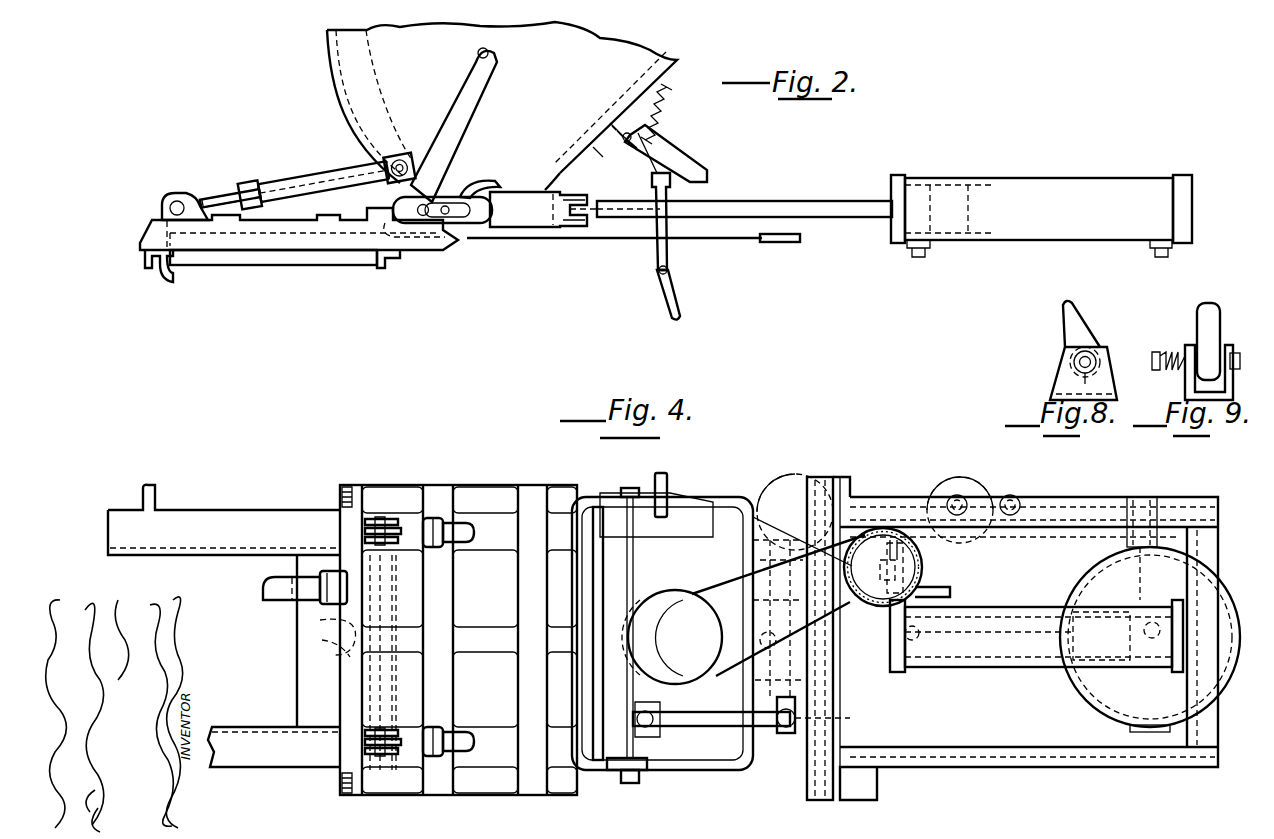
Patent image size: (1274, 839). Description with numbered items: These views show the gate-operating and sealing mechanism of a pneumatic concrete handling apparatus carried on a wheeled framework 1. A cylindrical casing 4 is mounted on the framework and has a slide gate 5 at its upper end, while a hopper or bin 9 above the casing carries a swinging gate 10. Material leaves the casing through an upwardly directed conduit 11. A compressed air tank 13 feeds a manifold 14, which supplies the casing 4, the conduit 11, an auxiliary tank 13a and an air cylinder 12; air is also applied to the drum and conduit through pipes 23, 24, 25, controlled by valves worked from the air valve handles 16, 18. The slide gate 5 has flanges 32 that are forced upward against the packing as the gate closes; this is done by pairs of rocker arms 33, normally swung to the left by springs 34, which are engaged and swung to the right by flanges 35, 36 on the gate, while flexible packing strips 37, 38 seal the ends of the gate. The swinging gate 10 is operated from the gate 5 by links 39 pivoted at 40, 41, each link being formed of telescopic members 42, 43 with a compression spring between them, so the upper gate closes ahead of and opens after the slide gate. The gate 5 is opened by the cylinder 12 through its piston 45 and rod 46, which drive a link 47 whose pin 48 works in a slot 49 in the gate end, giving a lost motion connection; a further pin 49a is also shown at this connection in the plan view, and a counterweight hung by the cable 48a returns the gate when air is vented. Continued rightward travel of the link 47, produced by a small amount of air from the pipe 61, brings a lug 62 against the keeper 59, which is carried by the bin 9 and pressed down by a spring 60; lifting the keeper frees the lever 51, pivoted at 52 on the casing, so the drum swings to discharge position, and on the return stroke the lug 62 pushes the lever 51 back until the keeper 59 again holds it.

In FIG. 4, the framework 1 is at (204, 520).
In FIG. 4, the cylindrical casing 4 is at (296, 657).
In FIG. 2, the slide gate 5 is at (150, 226).
In FIG. 4, the slide gate 5 is at (552, 492).
In FIG. 2, the hopper or bin 9 is at (655, 62).
In FIG. 2, the swinging gate 10 is at (473, 70).
In FIG. 4, the conduit 11 is at (918, 562).
In FIG. 4, the air cylinder 12 is at (990, 668).
In FIG. 4, the compressed air tank 13 is at (1087, 578).
In FIG. 4, the auxiliary tank 13a is at (962, 480).
In FIG. 4, the manifold 14 is at (1078, 538).
In FIG. 4, the air valve handle 16 is at (945, 590).
In FIG. 4, the air valve handle 18 is at (840, 730).
In FIG. 4, the pipe 23 is at (264, 594).
In FIG. 4, the pipe 24 is at (707, 722).
In FIG. 4, the pipe 25 is at (320, 640).
In FIG. 2, the gate flanges 32 is at (310, 258).
In FIG. 8, the rocker arms 33 is at (1062, 315).
In FIG. 9, the rocker arms 33 is at (1210, 322).
In FIG. 8, the springs 34 is at (1095, 352).
In FIG. 9, the springs 34 is at (1168, 352).
In FIG. 2, the gate flange 35 is at (146, 262).
In FIG. 2, the gate flange 36 is at (386, 264).
In FIG. 4, the flexible packing strip 37 is at (380, 675).
In FIG. 4, the flexible packing strip 38 is at (596, 510).
In FIG. 2, the links 39 is at (323, 181).
In FIG. 4, the links 39 is at (440, 518).
In FIG. 2, the pivot 40 is at (178, 201).
In FIG. 4, the pivot 40 is at (372, 517).
In FIG. 2, the pivot 41 is at (399, 168).
In FIG. 2, the telescopic member 42 is at (230, 198).
In FIG. 4, the telescopic member 42 is at (462, 752).
In FIG. 2, the telescopic member 43 is at (221, 200).
In FIG. 4, the telescopic member 43 is at (460, 522).
In FIG. 2, the piston 45 is at (955, 188).
In FIG. 4, the piston 45 is at (1113, 615).
In FIG. 2, the piston rod 46 is at (824, 202).
In FIG. 4, the piston rod 46 is at (1008, 628).
In FIG. 2, the link 47 is at (530, 196).
In FIG. 4, the link 47 is at (718, 507).
In FIG. 2, the pin 48 is at (428, 205).
In FIG. 4, the pin 48 is at (795, 520).
In FIG. 2, the cable 48a is at (563, 240).
In FIG. 4, the cable 48a is at (795, 515).
In FIG. 2, the slot 49 is at (448, 205).
In FIG. 4, the slot 49 is at (630, 488).
In FIG. 4, the pin 49a is at (668, 485).
In FIG. 2, the lever 51 is at (676, 300).
In FIG. 2, the lever pivot 52 is at (670, 268).
In FIG. 2, the keeper or latch 59 is at (668, 160).
In FIG. 2, the spring 60 is at (662, 107).
In FIG. 2, the pipe 61 is at (926, 254).
In FIG. 2, the lug 62 is at (470, 188).